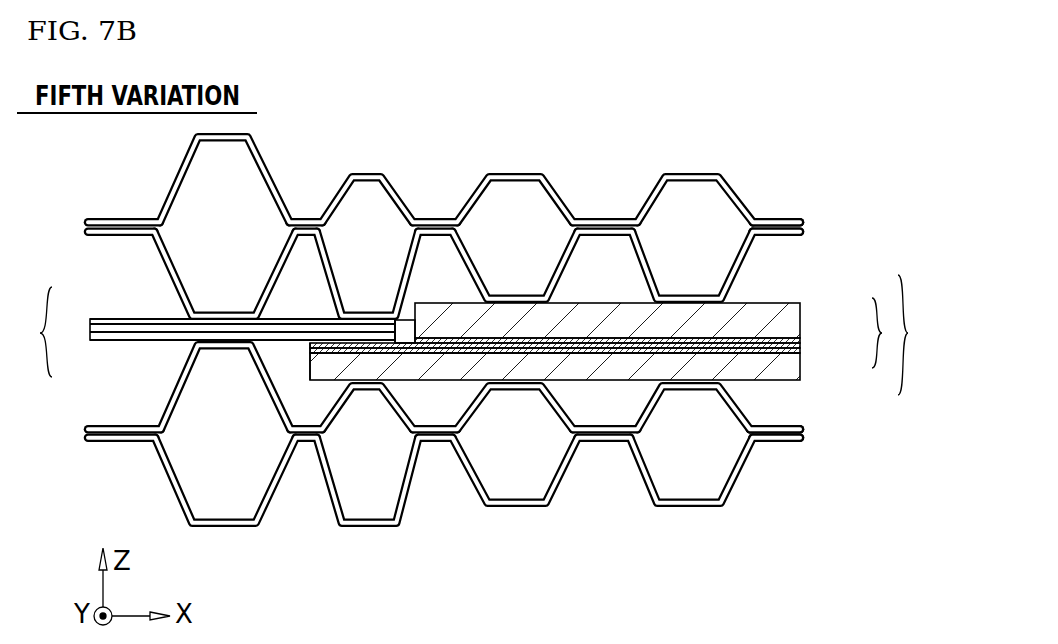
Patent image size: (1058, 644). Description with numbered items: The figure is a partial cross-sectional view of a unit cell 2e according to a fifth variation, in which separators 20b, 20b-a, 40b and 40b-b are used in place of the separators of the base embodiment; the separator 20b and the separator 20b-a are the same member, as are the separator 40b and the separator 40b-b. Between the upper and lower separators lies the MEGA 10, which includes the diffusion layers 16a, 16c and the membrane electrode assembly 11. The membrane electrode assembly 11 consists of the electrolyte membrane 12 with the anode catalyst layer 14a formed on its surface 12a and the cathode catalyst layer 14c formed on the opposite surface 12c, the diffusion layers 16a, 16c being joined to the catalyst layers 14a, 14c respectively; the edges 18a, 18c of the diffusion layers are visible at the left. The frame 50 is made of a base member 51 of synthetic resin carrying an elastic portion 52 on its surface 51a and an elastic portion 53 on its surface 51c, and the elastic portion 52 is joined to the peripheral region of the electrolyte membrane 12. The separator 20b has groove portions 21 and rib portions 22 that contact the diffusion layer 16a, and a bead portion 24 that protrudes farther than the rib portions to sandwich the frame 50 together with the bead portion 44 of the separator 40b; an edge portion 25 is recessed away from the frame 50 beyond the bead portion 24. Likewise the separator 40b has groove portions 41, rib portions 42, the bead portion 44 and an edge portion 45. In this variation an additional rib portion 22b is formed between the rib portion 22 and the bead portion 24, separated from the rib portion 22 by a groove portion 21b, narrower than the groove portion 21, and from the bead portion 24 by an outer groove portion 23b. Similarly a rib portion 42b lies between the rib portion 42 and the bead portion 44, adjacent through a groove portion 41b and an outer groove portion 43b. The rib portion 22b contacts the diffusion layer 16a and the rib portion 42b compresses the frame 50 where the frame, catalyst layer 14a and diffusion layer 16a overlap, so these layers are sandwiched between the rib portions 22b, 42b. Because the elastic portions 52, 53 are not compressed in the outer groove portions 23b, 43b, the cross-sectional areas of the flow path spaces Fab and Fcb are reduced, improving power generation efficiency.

The MEGA 10 is at (918, 335).
The membrane electrode assembly 11 is at (889, 333).
The electrolyte membrane 12 is at (800, 346).
The surface of the electrolyte membrane 12a is at (503, 372).
The surface of the electrolyte membrane 12c is at (590, 310).
The anode catalyst layer 14a is at (800, 352).
The cathode catalyst layer 14c is at (800, 341).
The diffusion layer 16a is at (790, 370).
The diffusion layer 16c is at (788, 313).
The edge of the diffusion layer 18a is at (287, 369).
The edge of the diffusion layer 18c is at (405, 316).
The separator 20b is at (800, 428).
The separator 20b-a is at (800, 215).
The groove portion 21 is at (604, 217).
The groove portion 21b is at (437, 217).
The rib portion 22 is at (522, 172).
The rib portion 22b is at (372, 172).
The outer groove portion 23b is at (306, 217).
The bead portion 24 is at (228, 142).
The edge portion 25 is at (101, 217).
The unit cell 2e is at (909, 262).
The separator 40b is at (800, 235).
The separator 40b-b is at (800, 440).
The groove portion 41 is at (610, 237).
The groove portion 41b is at (445, 237).
The rib portion 42 is at (512, 293).
The rib portion 42b is at (370, 311).
The outer groove portion 43b is at (300, 239).
The bead portion 44 is at (232, 311).
The edge portion 45 is at (100, 238).
The frame 50 is at (206, 332).
The base member 51 is at (90, 332).
The surface of the base member 51a is at (137, 341).
The surface of the base member 51c is at (152, 318).
The elastic portion 52 is at (90, 342).
The elastic portion 53 is at (90, 321).
The flow path space Fab is at (299, 366).
The flow path space Fcb is at (301, 265).